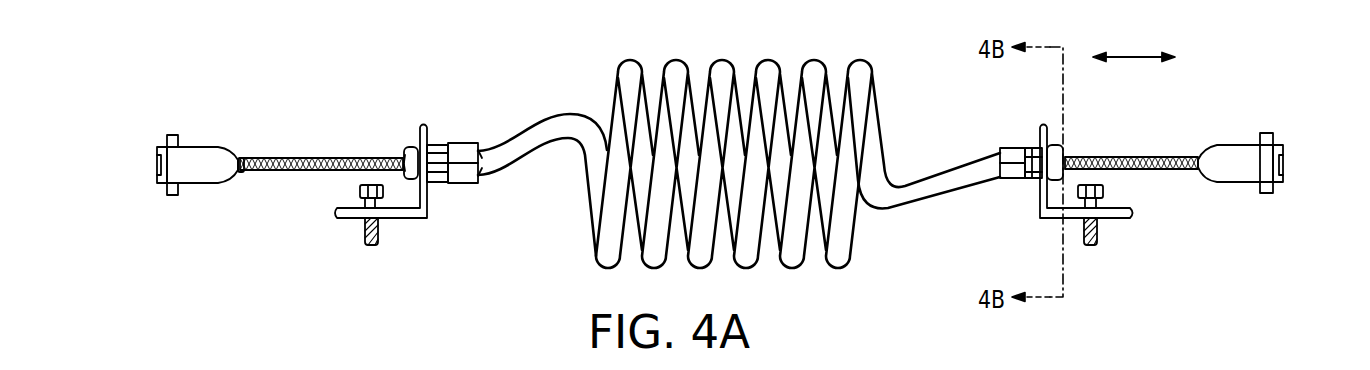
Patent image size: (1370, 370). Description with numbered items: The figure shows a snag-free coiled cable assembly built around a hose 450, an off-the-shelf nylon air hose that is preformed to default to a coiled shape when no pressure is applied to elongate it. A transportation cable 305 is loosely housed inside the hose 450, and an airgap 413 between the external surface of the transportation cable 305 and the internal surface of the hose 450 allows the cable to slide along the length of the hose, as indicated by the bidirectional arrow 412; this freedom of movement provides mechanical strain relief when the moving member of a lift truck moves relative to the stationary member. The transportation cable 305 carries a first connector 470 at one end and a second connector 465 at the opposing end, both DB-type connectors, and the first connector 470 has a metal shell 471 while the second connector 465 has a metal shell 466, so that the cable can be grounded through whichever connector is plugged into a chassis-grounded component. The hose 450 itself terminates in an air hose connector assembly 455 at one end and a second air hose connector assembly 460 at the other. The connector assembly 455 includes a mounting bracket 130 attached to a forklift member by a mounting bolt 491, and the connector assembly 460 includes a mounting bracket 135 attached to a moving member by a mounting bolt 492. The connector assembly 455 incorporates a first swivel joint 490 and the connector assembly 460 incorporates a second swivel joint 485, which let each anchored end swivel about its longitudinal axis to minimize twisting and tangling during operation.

The mounting bracket 130 is at (408, 220).
The mounting bracket 135 is at (1125, 220).
The transportation cable 305 is at (298, 140).
The bidirectional arrow 412 is at (1140, 53).
The airgap 413 is at (1082, 154).
The hose 450 is at (860, 58).
The air hose connector assembly 455 is at (459, 144).
The second air hose connector assembly 460 is at (1031, 157).
The second connector 465 is at (1240, 156).
The metal shell 466 is at (1250, 182).
The first connector 470 is at (227, 163).
The metal shell 471 is at (198, 183).
The second swivel joint 485 is at (1027, 180).
The first swivel joint 490 is at (443, 186).
The mounting bolt 491 is at (360, 192).
The mounting bolt 492 is at (1105, 192).